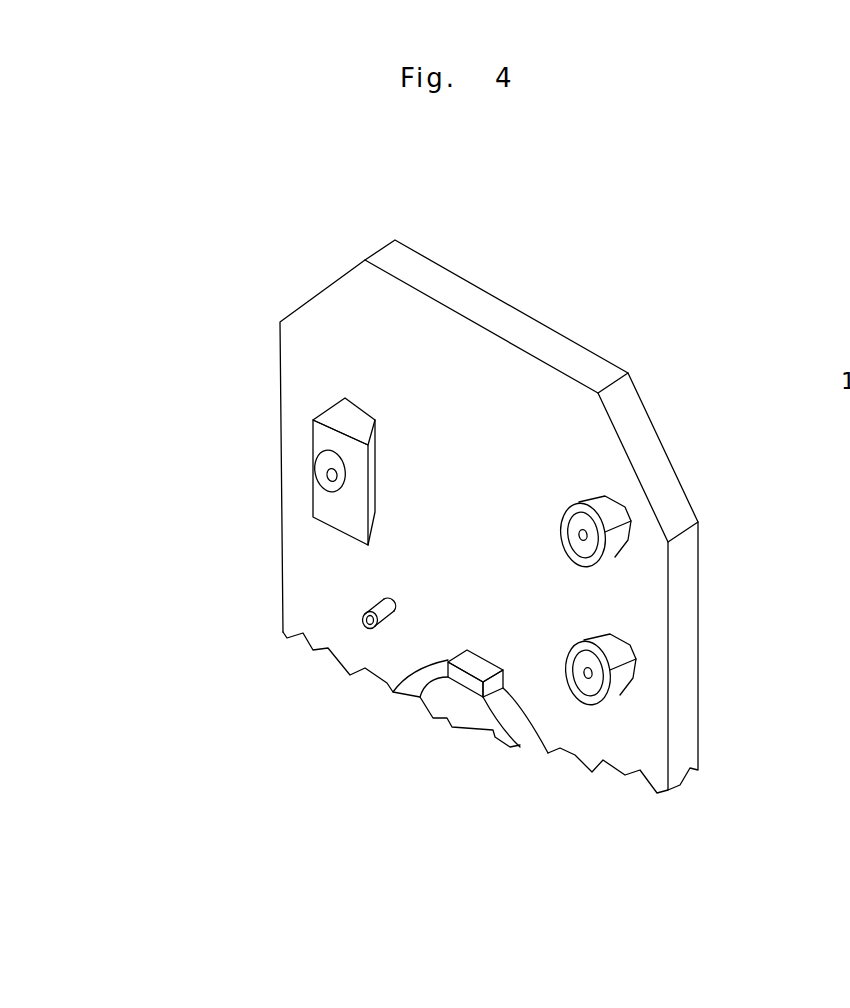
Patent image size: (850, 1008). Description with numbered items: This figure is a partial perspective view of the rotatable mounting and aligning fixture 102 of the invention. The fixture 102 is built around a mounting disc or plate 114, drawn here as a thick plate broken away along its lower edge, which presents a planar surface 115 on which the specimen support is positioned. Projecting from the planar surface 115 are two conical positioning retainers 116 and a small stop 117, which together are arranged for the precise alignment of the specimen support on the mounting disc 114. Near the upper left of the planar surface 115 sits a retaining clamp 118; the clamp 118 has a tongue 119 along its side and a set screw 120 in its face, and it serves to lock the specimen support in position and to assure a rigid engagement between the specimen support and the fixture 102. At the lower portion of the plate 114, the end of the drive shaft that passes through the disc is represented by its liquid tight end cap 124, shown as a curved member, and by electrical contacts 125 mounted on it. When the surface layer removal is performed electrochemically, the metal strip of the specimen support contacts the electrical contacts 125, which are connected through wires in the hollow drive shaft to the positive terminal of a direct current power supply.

The rotatable mounting and aligning fixture 102 is at (582, 260).
The mounting disc 114 is at (311, 282).
The planar surface 115 is at (371, 356).
The conical positioning retainers 116 is at (622, 558).
The stop 117 is at (356, 602).
The retaining clamp 118 is at (301, 410).
The tongue 119 is at (383, 481).
The set screw 120 is at (311, 456).
The liquid tight end cap 124 is at (526, 730).
The electrical contacts 125 is at (455, 681).